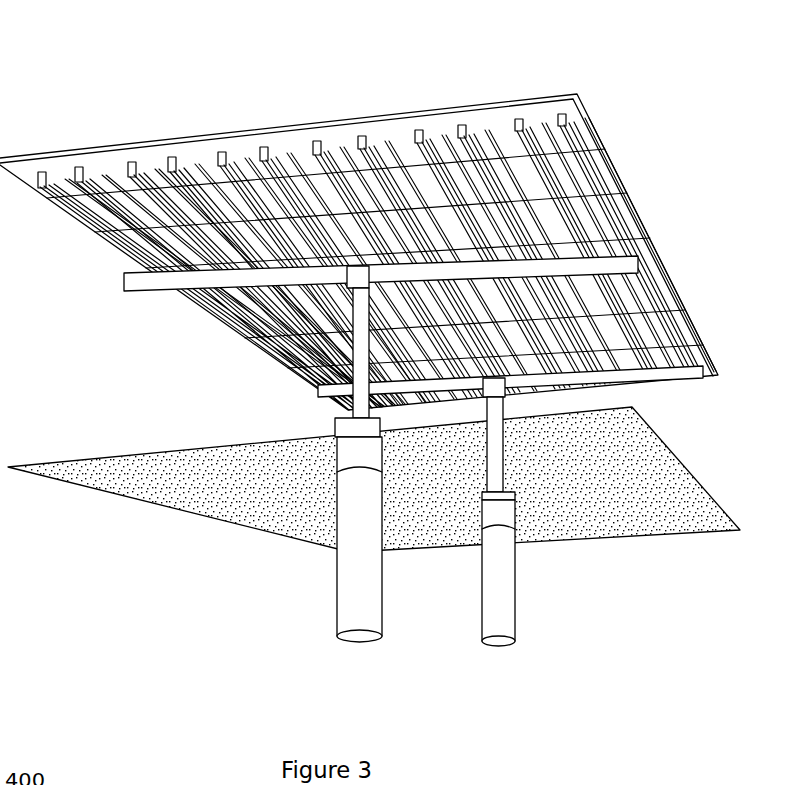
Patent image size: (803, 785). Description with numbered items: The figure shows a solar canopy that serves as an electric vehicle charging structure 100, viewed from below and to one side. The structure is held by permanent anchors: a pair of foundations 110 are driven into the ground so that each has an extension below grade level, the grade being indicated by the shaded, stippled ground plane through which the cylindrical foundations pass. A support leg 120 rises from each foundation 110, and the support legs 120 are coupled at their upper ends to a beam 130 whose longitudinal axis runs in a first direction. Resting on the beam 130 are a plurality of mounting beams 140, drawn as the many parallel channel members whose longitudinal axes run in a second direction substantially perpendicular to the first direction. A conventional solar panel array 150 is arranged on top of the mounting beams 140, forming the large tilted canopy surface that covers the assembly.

The electric vehicle charging structure 100 is at (370, 329).
The foundation 110 is at (351, 604).
The support leg 120 is at (347, 413).
The beam 130 is at (152, 298).
The mounting beam 140 is at (240, 336).
The solar panel array 150 is at (203, 132).